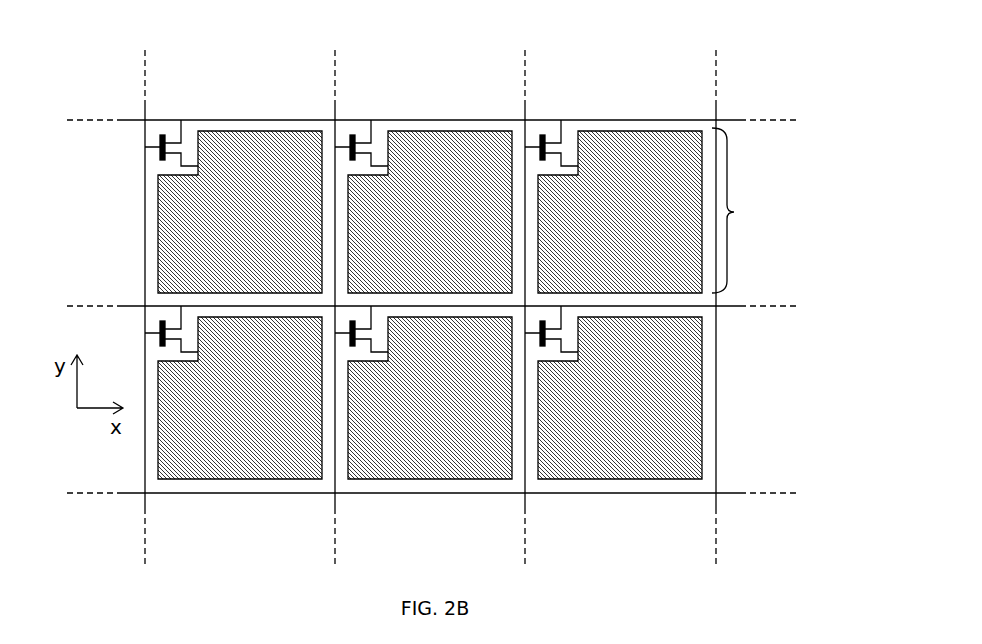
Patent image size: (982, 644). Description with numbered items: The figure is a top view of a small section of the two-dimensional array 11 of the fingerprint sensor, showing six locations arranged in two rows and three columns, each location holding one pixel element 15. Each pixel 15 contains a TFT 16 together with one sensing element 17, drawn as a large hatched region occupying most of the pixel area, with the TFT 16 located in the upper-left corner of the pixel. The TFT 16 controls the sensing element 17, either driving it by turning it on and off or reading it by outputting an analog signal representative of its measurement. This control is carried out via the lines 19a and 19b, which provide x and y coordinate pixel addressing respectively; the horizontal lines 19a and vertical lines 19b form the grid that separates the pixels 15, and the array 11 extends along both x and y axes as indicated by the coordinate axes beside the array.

The two-dimensional array 11 is at (760, 82).
The pixel element 15 is at (734, 212).
The TFT 16 is at (542, 134).
The sensing element 17 is at (618, 131).
The line 19a is at (200, 118).
The line 19b is at (524, 112).